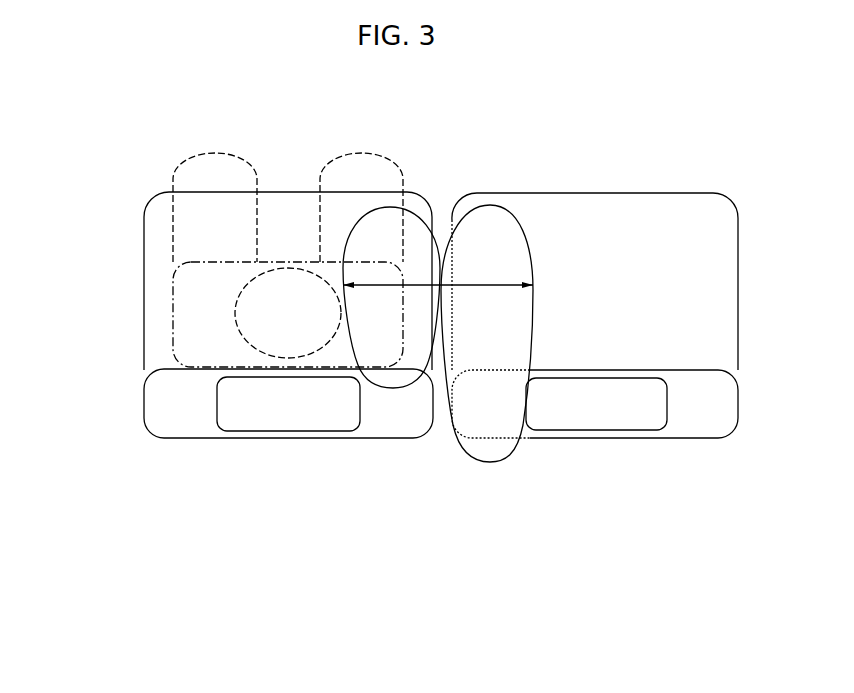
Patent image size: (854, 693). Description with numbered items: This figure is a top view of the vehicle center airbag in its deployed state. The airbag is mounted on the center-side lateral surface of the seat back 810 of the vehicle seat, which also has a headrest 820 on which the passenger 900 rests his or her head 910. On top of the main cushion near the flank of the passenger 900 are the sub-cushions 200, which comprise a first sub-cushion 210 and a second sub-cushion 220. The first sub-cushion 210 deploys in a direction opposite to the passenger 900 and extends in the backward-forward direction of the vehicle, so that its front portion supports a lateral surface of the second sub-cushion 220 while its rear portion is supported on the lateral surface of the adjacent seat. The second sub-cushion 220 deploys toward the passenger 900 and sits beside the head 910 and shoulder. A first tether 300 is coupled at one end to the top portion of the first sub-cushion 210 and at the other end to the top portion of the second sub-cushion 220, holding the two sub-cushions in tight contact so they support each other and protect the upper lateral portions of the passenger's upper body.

The sub-cushions 200 is at (398, 362).
The first sub-cushion 210 is at (487, 223).
The second sub-cushion 220 is at (299, 321).
The first tether 300 is at (507, 285).
The seat back 810 is at (197, 422).
The headrest 820 is at (290, 410).
The passenger 900 is at (210, 311).
The head 910 is at (255, 308).